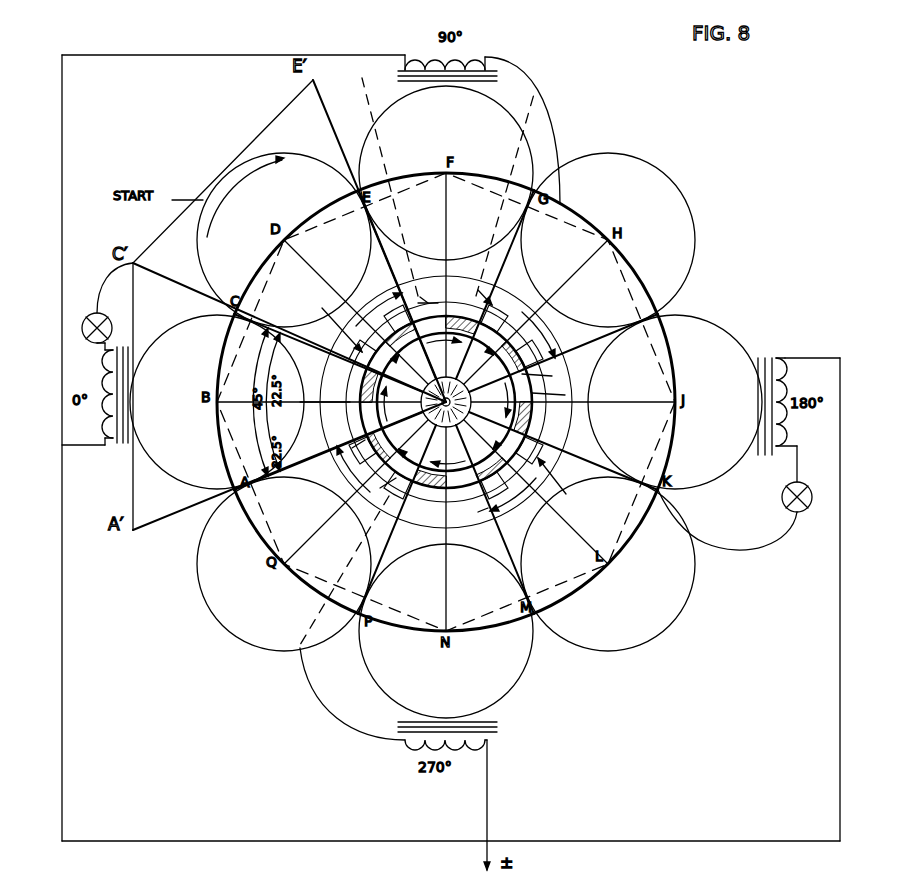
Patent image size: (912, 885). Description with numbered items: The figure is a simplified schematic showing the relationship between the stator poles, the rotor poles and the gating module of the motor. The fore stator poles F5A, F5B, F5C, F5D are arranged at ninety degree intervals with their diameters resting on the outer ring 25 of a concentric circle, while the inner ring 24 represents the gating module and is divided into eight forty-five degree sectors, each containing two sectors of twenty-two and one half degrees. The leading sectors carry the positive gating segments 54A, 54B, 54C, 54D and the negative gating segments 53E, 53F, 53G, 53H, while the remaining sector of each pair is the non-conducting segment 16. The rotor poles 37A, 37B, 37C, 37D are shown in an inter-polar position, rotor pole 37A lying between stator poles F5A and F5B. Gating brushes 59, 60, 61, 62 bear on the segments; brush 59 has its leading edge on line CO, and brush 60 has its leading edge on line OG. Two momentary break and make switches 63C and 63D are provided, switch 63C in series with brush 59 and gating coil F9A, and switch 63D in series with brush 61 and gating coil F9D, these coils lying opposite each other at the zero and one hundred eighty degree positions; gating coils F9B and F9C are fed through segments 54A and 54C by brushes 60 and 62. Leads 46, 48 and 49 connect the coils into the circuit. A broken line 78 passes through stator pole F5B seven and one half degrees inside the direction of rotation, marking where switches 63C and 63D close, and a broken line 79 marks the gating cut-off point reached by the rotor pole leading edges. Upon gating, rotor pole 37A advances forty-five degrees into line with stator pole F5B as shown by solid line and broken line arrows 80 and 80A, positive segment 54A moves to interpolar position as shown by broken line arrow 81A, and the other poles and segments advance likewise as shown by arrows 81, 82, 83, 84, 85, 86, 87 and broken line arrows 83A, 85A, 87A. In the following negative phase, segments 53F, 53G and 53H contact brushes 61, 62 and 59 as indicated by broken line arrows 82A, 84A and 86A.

The outer ring 25 is at (655, 310).
The broken line 78 is at (373, 106).
The broken line gating cut-off point 79 is at (528, 120).
The fore stator pole F5A is at (217, 402).
The fore stator pole F5B is at (446, 173).
The fore stator pole F5C is at (675, 402).
The fore stator pole F5D is at (446, 631).
The rotor pole 37A is at (228, 173).
The rotor pole 37B is at (622, 160).
The rotor pole 37C is at (612, 651).
The rotor pole 37D is at (199, 576).
The positive gating segment 54A is at (470, 322).
The positive gating segment 54B is at (540, 440).
The positive gating segment 54C is at (428, 498).
The positive gating segment 54D is at (352, 397).
The negative gating segment 53E is at (394, 330).
The negative gating segment 53F is at (521, 352).
The negative gating segment 53G is at (493, 475).
The negative gating segment 53H is at (359, 461).
The arrow 81 is at (444, 349).
The arrow 83 is at (495, 400).
The arrow 85 is at (448, 456).
The arrow 87 is at (394, 404).
The solid line arrow 80 is at (379, 302).
The arrow 82 is at (544, 335).
The arrow 84 is at (513, 501).
The arrow 86 is at (337, 469).
The broken line arrow 87A is at (409, 365).
The broken line arrow 81A is at (484, 364).
The broken line arrow 83A is at (489, 437).
The broken line arrow 85A is at (409, 441).
The broken line arrow 80A is at (421, 291).
The gating brush 60 is at (473, 288).
The broken line arrow 82A is at (551, 377).
The non-conducting segment 16 is at (559, 395).
The gating brush 59 is at (332, 320).
The gating brush 61 is at (558, 487).
The gating brush 62 is at (375, 491).
The broken line arrow 84A is at (466, 520).
The broken line arrow 86A is at (335, 441).
The inner ring 24 is at (325, 411).
The gating coil F9A is at (112, 420).
The gating coil F9B is at (420, 62).
The gating coil F9C is at (784, 368).
The gating coil F9D is at (490, 745).
The lead 49 is at (556, 86).
The lead 48 is at (300, 705).
The momentary break and make switch 63C is at (82, 325).
The momentary break and make switch 63D is at (783, 493).
The lead 46 is at (780, 542).